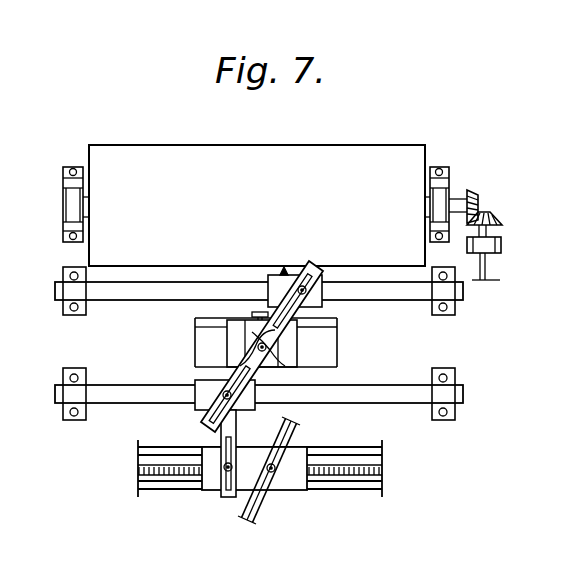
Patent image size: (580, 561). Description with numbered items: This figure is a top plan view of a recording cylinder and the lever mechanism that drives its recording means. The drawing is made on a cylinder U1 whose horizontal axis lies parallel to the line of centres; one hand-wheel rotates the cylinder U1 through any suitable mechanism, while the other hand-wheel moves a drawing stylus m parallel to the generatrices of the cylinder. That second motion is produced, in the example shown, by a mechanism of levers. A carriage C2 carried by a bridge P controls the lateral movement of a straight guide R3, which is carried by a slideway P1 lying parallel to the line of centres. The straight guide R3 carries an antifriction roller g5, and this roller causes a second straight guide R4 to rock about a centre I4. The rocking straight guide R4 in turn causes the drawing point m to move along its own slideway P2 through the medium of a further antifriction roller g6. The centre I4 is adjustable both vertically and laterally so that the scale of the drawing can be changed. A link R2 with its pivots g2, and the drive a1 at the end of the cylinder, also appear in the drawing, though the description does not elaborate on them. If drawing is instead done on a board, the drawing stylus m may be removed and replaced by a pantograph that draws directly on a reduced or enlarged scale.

The cylinder U1 is at (127, 154).
The bevel gear drive shaft a1 is at (488, 271).
The drawing stylus m is at (277, 265).
The antifriction roller g6 is at (298, 269).
The straight guide R4 is at (291, 321).
The centre I4 is at (258, 347).
The slideway P2 is at (378, 291).
The slideway P1 is at (391, 393).
The antifriction roller g5 is at (233, 398).
The straight guide R3 is at (220, 428).
The carriage C2 is at (302, 453).
The bridge P is at (366, 458).
The pivot pins g2 is at (288, 501).
The link rod R2 is at (254, 513).